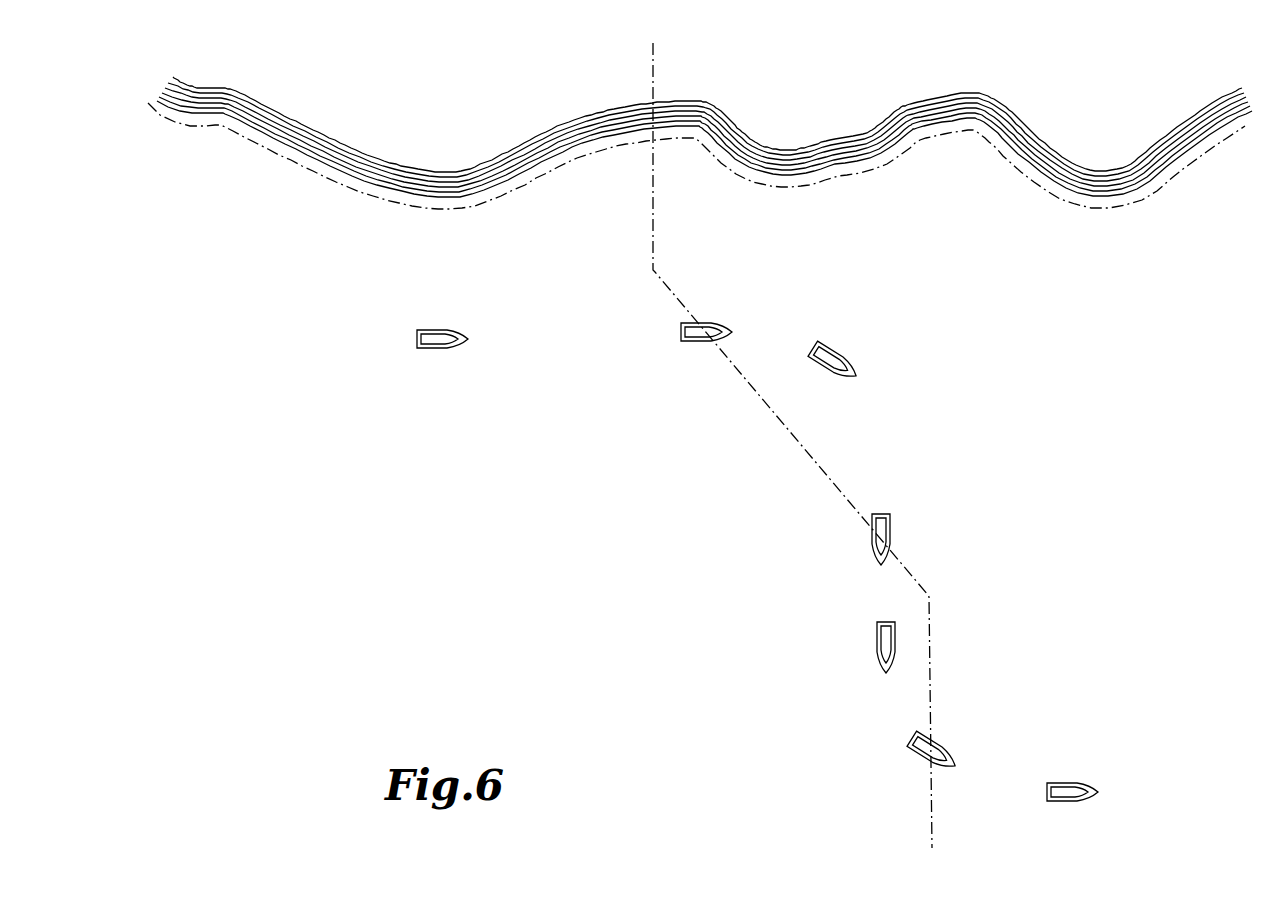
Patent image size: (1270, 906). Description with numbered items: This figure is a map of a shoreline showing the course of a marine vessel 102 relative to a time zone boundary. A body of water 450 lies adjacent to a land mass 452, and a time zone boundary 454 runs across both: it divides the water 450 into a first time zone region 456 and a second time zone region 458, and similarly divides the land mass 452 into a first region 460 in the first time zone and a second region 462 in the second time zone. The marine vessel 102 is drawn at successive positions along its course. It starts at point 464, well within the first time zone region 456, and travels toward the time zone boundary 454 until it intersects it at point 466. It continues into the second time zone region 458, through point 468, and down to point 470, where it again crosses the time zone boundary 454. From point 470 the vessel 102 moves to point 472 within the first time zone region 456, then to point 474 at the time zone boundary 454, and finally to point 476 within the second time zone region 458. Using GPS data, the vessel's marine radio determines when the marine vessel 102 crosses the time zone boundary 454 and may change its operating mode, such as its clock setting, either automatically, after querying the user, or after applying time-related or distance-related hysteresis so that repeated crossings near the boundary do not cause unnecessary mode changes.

The marine vessel 102 is at (761, 559).
The body of water 450 is at (745, 656).
The land mass 452 is at (626, 70).
The time zone boundary 454 is at (792, 435).
The first time zone region 456 is at (531, 494).
The second time zone region 458 is at (1086, 486).
The first region of land mass 460 is at (450, 102).
The second region of land mass 462 is at (923, 74).
The point 464 is at (442, 327).
The point 466 is at (706, 319).
The point 468 is at (834, 355).
The point 470 is at (902, 539).
The point 472 is at (907, 647).
The point 474 is at (933, 745).
The point 476 is at (1070, 781).